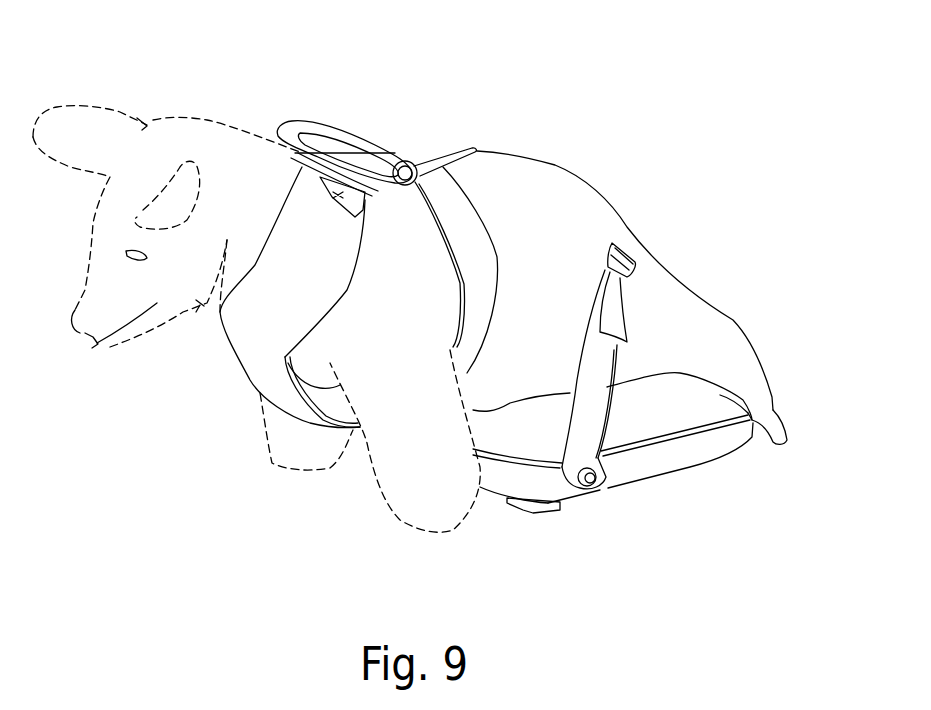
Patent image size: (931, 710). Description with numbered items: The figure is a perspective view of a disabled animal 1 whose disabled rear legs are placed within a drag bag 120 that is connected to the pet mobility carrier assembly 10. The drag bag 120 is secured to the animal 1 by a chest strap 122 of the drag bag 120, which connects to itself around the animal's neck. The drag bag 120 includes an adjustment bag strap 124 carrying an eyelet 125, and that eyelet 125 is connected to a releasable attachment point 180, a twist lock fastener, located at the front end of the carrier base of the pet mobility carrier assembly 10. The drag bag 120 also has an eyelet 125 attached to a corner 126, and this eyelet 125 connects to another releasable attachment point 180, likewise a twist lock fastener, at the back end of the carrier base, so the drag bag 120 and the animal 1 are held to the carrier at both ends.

The disabled animal 1 is at (177, 118).
The pet mobility carrier assembly 10 is at (647, 470).
The drag bag 120 is at (525, 157).
The chest strap 122 is at (257, 317).
The adjustment bag strap 124 is at (602, 367).
The eyelet 125 is at (583, 473).
The corner 126 is at (787, 417).
The releasable attachment point 180 is at (598, 488).